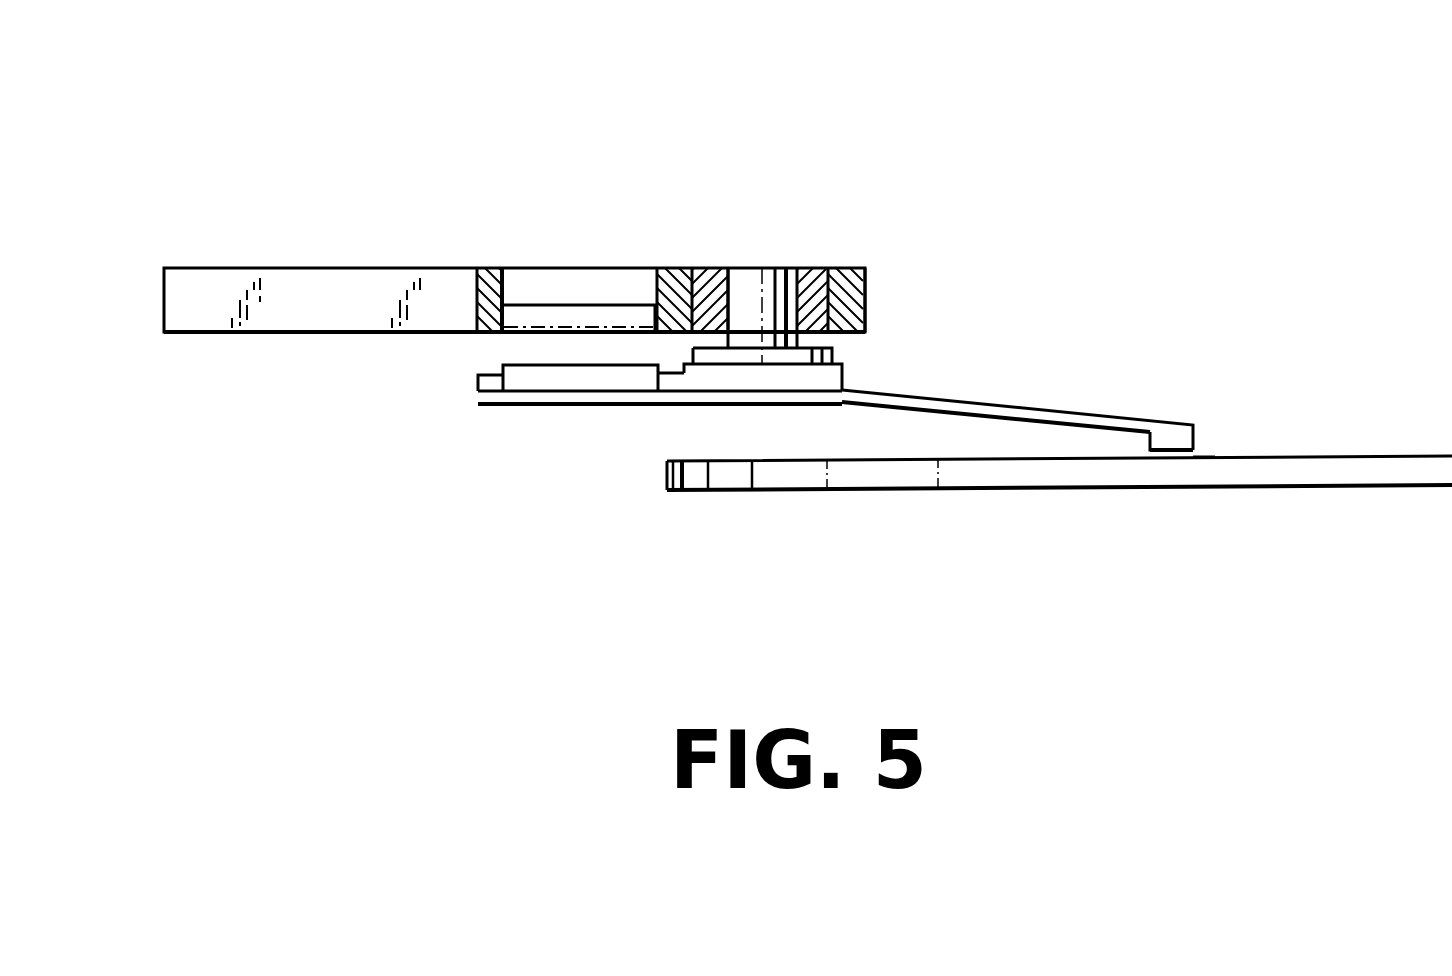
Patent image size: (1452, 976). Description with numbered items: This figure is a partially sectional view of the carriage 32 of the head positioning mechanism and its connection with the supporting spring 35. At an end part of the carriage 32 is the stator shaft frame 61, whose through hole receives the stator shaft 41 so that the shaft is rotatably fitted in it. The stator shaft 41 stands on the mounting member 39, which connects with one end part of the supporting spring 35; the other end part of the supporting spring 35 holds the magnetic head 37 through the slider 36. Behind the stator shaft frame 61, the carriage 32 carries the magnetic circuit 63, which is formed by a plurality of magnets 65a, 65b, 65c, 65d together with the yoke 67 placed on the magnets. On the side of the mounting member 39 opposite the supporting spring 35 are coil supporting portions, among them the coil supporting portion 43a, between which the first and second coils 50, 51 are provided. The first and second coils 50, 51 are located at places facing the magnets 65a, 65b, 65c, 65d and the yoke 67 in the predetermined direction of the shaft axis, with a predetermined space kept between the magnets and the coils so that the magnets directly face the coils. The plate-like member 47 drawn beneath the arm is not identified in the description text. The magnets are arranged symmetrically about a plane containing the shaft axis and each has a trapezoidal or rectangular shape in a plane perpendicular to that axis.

The carriage 32 is at (302, 278).
The magnetic circuit 63 is at (897, 80).
The yoke 67 is at (523, 267).
The magnet 65a is at (693, 206).
The magnet 65b is at (693, 206).
The magnet 65c is at (693, 206).
The magnet 65d is at (577, 305).
The stator shaft 41 is at (752, 267).
The stator shaft frame 61 is at (817, 267).
The mounting member 39 is at (842, 380).
The first coil 50 is at (579, 438).
The second coil 51 is at (568, 380).
The coil supporting portion 43a is at (478, 382).
The supporting spring 35 is at (1090, 416).
The slider 36 is at (1170, 455).
The magnetic head 37 is at (1200, 452).
The base plate 47 is at (733, 495).